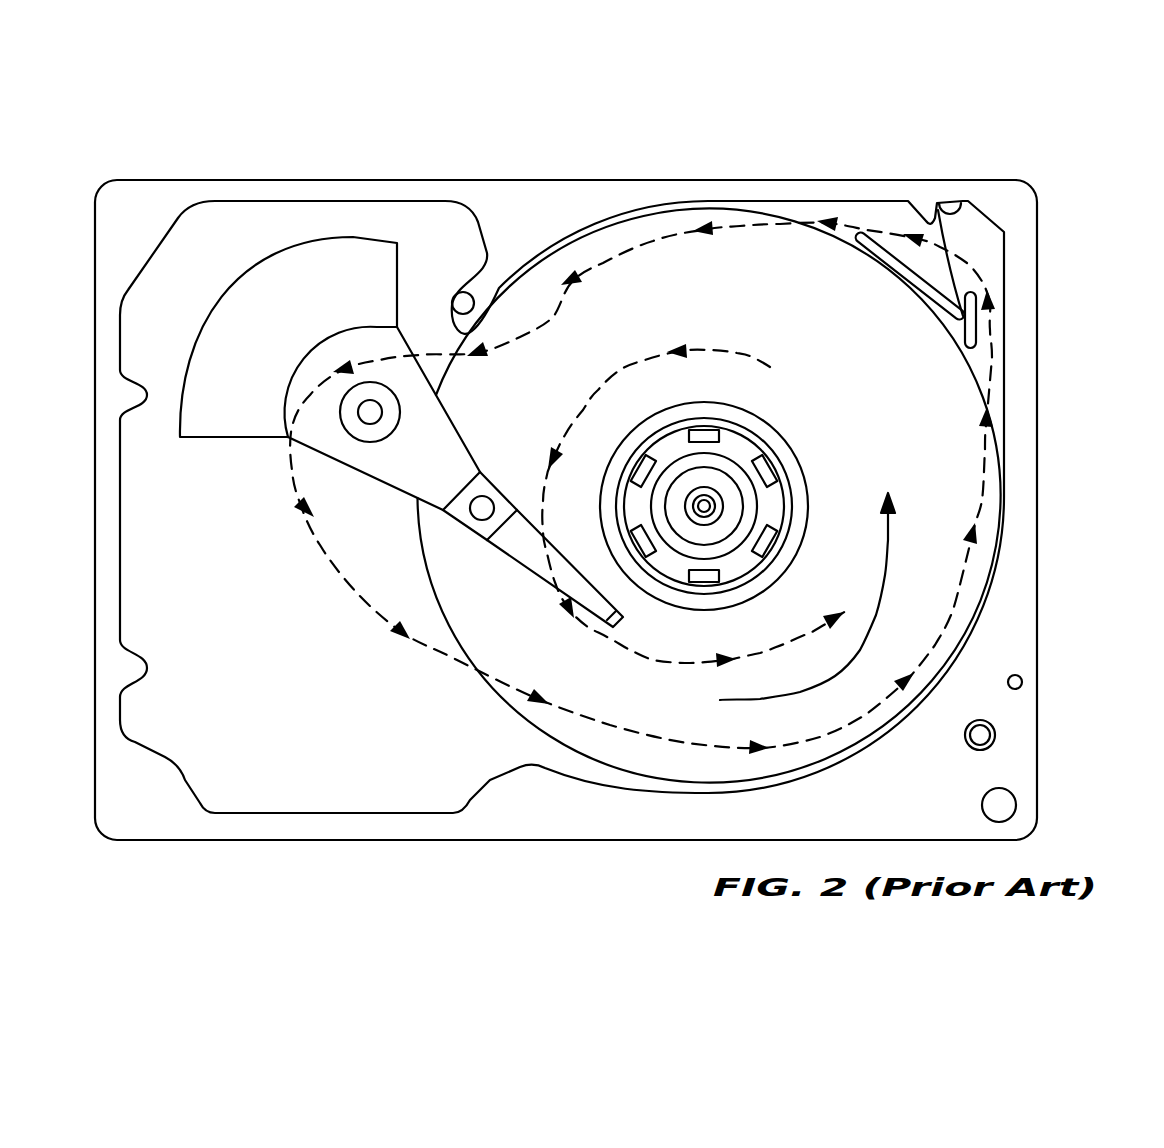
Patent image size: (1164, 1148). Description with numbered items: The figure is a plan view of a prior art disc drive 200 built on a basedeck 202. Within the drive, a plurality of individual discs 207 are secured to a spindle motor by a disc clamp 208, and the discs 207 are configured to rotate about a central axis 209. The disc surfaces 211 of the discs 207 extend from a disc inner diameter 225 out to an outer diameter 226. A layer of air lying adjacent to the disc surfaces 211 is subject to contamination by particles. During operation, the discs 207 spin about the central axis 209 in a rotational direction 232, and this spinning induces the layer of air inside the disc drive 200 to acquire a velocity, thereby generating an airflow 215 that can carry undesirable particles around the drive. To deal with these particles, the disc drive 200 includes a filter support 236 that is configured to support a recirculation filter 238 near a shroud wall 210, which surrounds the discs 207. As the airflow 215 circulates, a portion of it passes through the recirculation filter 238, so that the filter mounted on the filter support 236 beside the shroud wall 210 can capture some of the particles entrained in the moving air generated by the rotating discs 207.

The disc drive 200 is at (883, 118).
The basedeck 202 is at (1017, 650).
The discs 207 is at (462, 547).
The disc clamp 208 is at (768, 510).
The central axis 209 is at (702, 520).
The shroud wall 210 is at (541, 247).
The disc surfaces 211 is at (497, 613).
The airflow 215 is at (565, 423).
The disc inner diameter 225 is at (695, 403).
The outer diameter 226 is at (517, 713).
The rotational direction 232 is at (868, 600).
The filter support 236 is at (968, 328).
The recirculation filter 238 is at (950, 247).